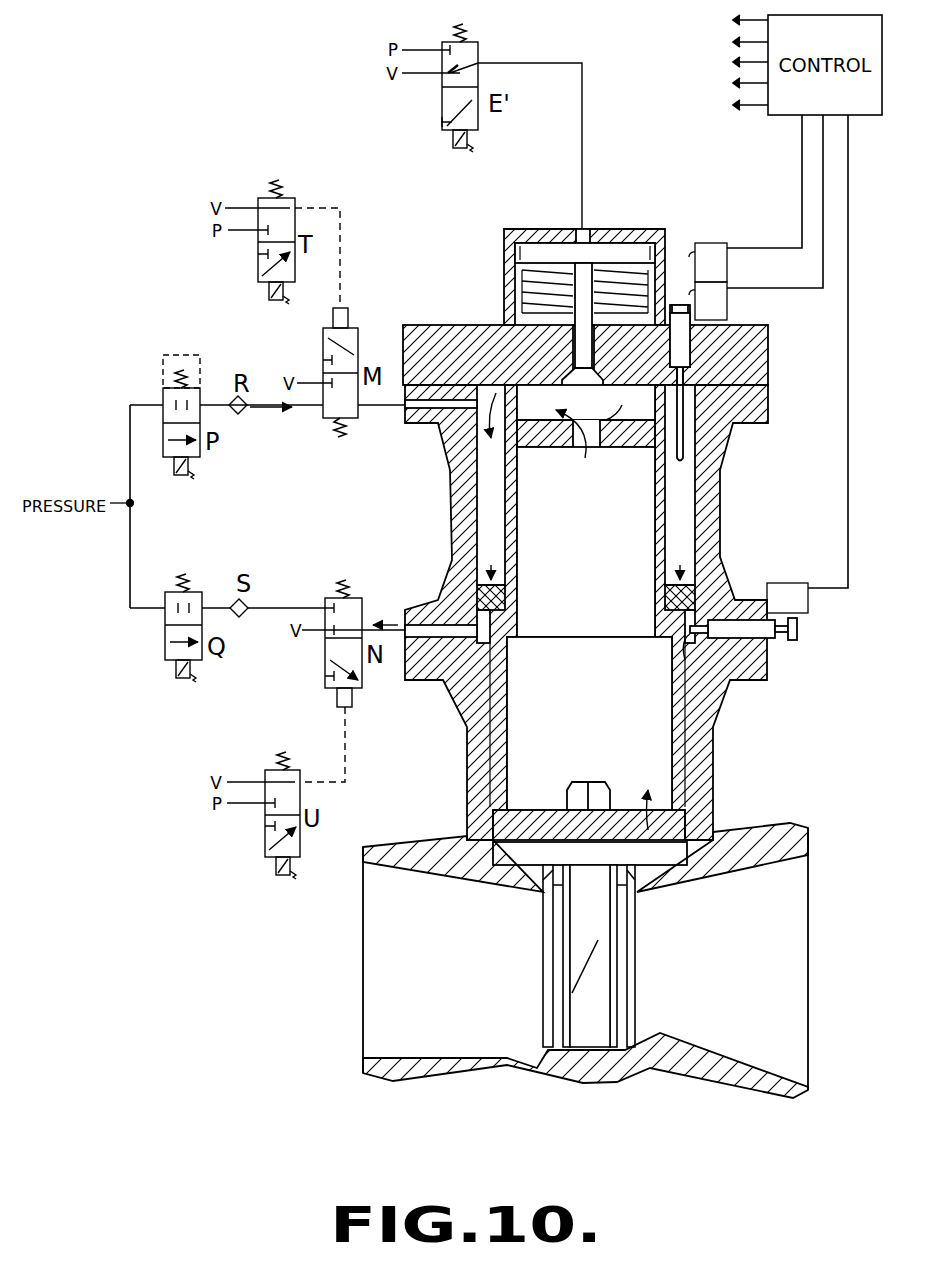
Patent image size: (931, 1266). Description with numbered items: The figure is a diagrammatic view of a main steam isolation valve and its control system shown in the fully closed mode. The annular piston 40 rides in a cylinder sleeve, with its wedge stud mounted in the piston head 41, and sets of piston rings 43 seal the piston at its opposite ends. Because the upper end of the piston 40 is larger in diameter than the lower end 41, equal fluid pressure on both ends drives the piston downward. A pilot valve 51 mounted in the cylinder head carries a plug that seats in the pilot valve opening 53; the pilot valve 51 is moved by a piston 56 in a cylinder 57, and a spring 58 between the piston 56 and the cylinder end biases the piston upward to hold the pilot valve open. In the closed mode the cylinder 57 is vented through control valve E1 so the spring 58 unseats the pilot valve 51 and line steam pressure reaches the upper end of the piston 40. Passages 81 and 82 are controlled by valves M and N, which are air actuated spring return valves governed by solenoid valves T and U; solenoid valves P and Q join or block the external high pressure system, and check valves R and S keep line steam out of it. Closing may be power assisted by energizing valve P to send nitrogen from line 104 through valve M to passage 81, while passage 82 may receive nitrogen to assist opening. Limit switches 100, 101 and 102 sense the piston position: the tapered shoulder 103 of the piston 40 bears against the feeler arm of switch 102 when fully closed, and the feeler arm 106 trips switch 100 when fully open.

The annular piston 40 is at (700, 753).
The head of piston 41 is at (512, 845).
The piston rings 43 is at (668, 586).
The pilot valve 51 is at (580, 332).
The pilot valve opening 53 is at (589, 612).
The piston 56 is at (527, 246).
The cylinder 57 is at (615, 243).
The spring 58 is at (522, 290).
The passage 81 is at (432, 407).
The passage 82 is at (434, 612).
The limit switch 100 is at (708, 262).
The limit switch 101 is at (708, 301).
The limit switch 102 is at (787, 598).
The tapered shoulder 103 is at (688, 642).
The line 104 is at (132, 537).
The feeler arm 106 is at (672, 480).